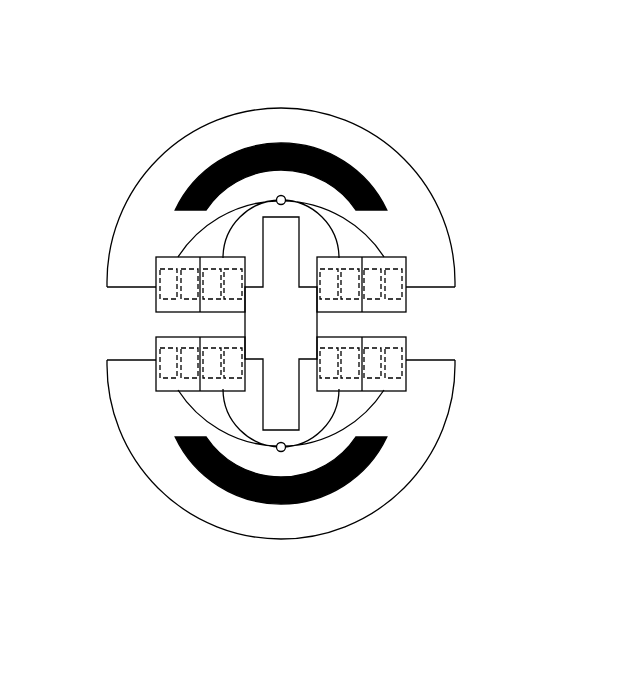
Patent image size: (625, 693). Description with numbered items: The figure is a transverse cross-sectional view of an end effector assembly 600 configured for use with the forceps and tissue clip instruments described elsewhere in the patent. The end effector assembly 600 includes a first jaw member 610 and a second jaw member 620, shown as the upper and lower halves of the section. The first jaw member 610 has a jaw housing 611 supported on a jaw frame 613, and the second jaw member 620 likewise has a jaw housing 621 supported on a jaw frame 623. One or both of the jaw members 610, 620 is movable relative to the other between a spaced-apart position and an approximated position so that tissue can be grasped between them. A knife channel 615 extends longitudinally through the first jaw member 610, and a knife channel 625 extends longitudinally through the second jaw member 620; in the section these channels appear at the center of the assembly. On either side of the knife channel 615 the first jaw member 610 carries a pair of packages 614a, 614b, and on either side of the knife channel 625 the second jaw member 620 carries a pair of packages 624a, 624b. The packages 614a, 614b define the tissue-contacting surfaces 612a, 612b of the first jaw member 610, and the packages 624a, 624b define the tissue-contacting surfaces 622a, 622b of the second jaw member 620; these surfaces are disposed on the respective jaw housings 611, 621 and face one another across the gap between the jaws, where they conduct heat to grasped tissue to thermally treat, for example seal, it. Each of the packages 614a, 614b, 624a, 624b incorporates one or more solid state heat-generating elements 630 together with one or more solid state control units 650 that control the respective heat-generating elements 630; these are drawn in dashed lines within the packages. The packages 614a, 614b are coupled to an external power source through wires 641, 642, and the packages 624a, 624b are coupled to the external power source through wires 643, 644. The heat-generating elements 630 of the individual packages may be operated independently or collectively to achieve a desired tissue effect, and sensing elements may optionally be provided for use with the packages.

The end effector assembly 600 is at (470, 71).
The first jaw member 610 is at (216, 107).
The jaw housing 611 is at (352, 140).
The jaw frame 613 is at (268, 147).
The knife channel 615 is at (303, 142).
The wire 641 is at (220, 188).
The wire 642 is at (342, 188).
The second jaw member 620 is at (216, 539).
The jaw housing 621 is at (352, 508).
The jaw frame 623 is at (265, 507).
The knife channel 625 is at (297, 507).
The wire 643 is at (220, 459).
The wire 644 is at (342, 459).
The package 614a is at (195, 302).
The package 614b is at (367, 302).
The tissue-contacting surface 612a is at (170, 316).
The tissue-contacting surface 612b is at (392, 316).
The tissue-contacting surface 622a is at (170, 332).
The tissue-contacting surface 622b is at (392, 332).
The package 624a is at (195, 346).
The package 624b is at (367, 346).
The solid state heat-generating element 630 is at (212, 276).
The solid state control unit 650 is at (233, 276).